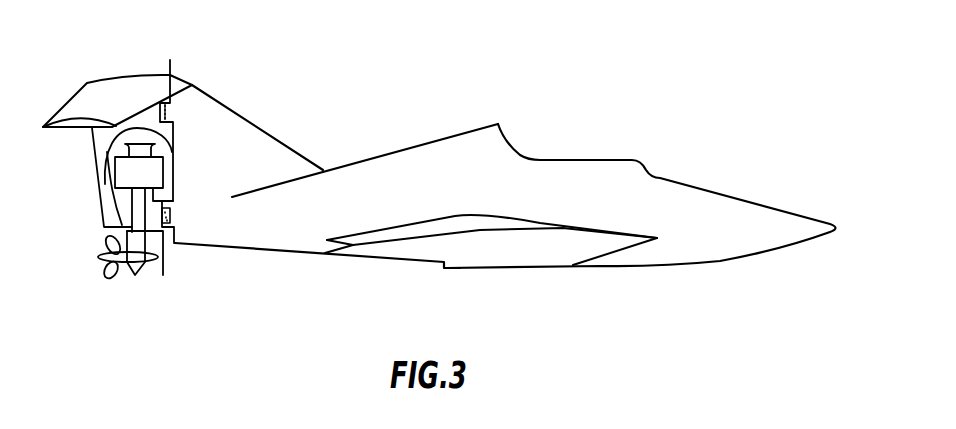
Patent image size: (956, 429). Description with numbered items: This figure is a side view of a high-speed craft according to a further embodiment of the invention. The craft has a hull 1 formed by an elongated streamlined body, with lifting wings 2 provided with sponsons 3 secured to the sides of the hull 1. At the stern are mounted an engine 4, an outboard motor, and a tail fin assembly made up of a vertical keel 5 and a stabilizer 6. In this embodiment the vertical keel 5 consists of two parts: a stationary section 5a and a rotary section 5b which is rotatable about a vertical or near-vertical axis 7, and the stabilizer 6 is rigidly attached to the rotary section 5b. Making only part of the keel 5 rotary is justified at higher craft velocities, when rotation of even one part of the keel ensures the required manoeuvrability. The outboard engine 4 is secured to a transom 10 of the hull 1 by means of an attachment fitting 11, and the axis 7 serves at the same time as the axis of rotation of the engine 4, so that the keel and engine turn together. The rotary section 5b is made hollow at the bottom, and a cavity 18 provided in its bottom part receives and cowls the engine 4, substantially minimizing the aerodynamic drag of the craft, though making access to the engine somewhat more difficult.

The hull 1 is at (707, 208).
The lifting wings 2 is at (385, 232).
The sponsons 3 is at (468, 252).
The engine 4 is at (113, 192).
The vertical keel 5 is at (221, 94).
The stationary section 5a is at (230, 147).
The rotary section 5b is at (113, 180).
The stabilizer 6 is at (92, 102).
The axis 7 is at (169, 67).
The transom 10 is at (169, 232).
The attachment fitting 11 is at (172, 215).
The cavity 18 is at (124, 176).